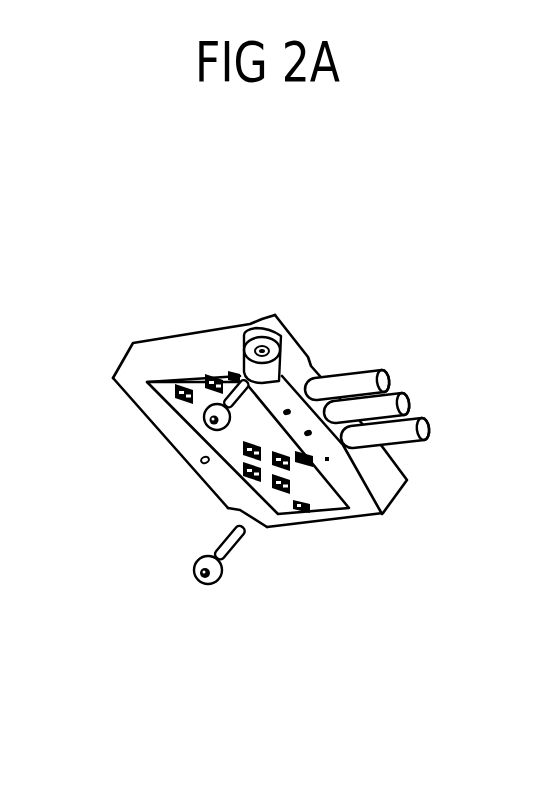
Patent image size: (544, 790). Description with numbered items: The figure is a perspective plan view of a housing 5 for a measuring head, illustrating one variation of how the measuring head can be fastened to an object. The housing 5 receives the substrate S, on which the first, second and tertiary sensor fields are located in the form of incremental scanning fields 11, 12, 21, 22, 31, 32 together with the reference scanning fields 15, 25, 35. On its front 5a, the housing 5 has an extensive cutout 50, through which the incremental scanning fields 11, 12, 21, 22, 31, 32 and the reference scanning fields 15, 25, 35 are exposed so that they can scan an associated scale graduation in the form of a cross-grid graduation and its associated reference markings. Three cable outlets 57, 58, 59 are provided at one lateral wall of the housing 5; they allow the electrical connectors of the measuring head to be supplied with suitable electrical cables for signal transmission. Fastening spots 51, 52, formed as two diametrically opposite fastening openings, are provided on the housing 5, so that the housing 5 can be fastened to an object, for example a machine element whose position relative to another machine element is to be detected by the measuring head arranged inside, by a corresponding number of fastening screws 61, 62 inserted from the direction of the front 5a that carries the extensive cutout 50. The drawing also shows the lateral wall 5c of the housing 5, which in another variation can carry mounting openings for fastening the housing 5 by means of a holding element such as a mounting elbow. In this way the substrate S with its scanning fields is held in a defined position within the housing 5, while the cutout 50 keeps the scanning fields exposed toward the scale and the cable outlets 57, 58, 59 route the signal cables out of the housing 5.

The housing 5 is at (148, 416).
The front 5a is at (363, 505).
The lateral wall 5c is at (390, 490).
The incremental scanning field 11 is at (242, 470).
The incremental scanning field 12 is at (284, 420).
The reference scanning field 15 is at (322, 463).
The incremental scanning field 21 is at (300, 355).
The incremental scanning field 22 is at (278, 490).
The reference scanning field 25 is at (299, 515).
The incremental scanning field 31 is at (182, 383).
The incremental scanning field 32 is at (215, 373).
The reference scanning field 35 is at (232, 370).
The extensive cutout 50 is at (155, 373).
The fastening spot 51 is at (265, 335).
The fastening spot 52 is at (247, 512).
The cable outlet 57 is at (428, 432).
The cable outlet 58 is at (407, 397).
The cable outlet 59 is at (383, 368).
The fastening screw 61 is at (205, 427).
The fastening screw 62 is at (210, 585).
The substrate S is at (328, 507).